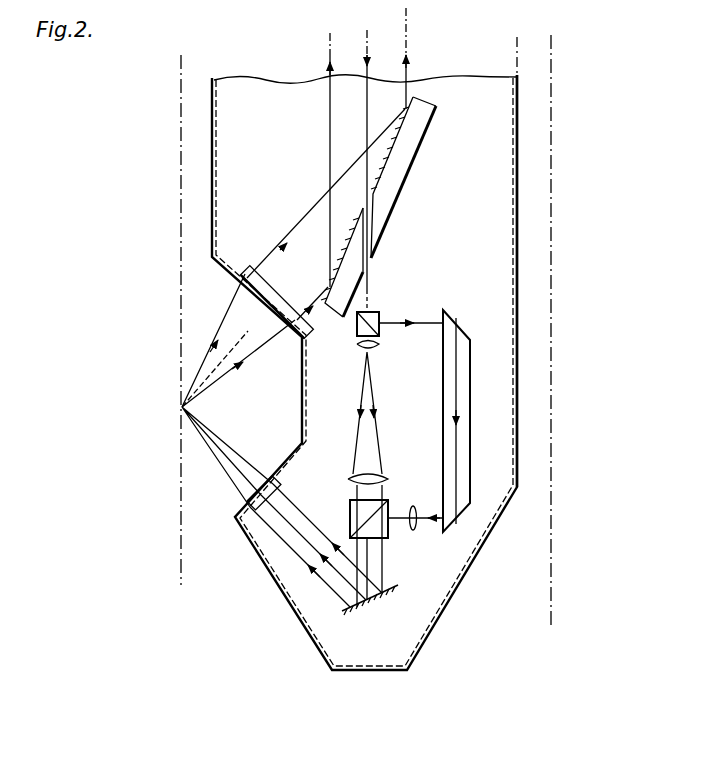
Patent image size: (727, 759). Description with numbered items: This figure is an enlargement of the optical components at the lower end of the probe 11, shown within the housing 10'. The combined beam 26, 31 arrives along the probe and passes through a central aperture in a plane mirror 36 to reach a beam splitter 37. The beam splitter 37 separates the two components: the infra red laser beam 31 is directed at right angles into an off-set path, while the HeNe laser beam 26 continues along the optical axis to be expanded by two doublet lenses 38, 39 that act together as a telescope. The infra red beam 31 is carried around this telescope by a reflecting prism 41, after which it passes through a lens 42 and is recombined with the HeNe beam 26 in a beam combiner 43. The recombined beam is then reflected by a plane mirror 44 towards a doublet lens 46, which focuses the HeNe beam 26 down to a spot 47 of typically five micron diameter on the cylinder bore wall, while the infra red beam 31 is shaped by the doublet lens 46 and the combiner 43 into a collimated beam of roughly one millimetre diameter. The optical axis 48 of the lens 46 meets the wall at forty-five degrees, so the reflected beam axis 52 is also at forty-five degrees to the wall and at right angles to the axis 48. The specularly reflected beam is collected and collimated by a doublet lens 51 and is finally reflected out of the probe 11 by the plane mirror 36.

The housing 10' is at (411, 372).
The probe 11 is at (520, 368).
The HeNe laser beam 26 is at (411, 51).
The infra red laser beam 31 is at (458, 378).
The plane mirror 36 is at (397, 175).
The beam splitter 37 is at (380, 330).
The doublet lens 38 is at (357, 346).
The doublet lens 39 is at (386, 474).
The prism 41 is at (463, 481).
The lens 42 is at (415, 506).
The beam combiner 43 is at (350, 510).
The plane mirror 44 is at (382, 592).
The doublet lens 46 is at (251, 518).
The spot 47 is at (178, 411).
The optical axis 48 is at (221, 452).
The doublet lens 51 is at (245, 270).
The reflected beam axis 52 is at (219, 359).